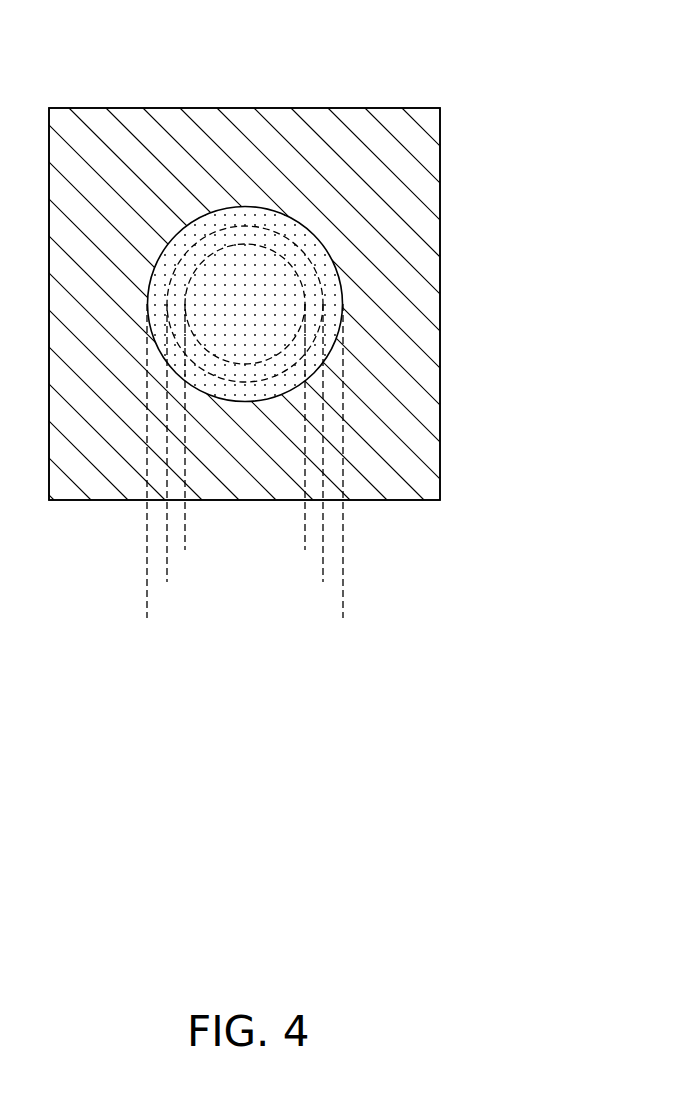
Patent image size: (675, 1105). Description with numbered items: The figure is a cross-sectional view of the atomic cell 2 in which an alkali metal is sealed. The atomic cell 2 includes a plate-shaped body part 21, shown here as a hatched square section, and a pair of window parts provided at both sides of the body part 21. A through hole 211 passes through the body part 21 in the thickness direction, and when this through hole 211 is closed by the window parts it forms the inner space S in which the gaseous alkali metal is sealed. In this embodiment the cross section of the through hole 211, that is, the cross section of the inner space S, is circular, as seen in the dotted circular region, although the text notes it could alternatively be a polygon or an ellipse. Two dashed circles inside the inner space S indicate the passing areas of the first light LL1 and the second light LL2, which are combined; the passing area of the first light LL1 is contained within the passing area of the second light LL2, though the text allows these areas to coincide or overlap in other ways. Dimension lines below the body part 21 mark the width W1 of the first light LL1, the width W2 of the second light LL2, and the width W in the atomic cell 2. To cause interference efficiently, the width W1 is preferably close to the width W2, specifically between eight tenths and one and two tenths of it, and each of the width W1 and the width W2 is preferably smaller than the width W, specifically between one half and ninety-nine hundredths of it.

The atomic cell 2 is at (380, 108).
The body part 21 is at (427, 143).
The through hole 211 is at (340, 281).
The first light LL1 is at (257, 243).
The second light LL2 is at (207, 223).
The inner space S is at (258, 314).
The width W is at (343, 607).
The width of the first light W1 is at (305, 535).
The width of the second light W2 is at (324, 571).